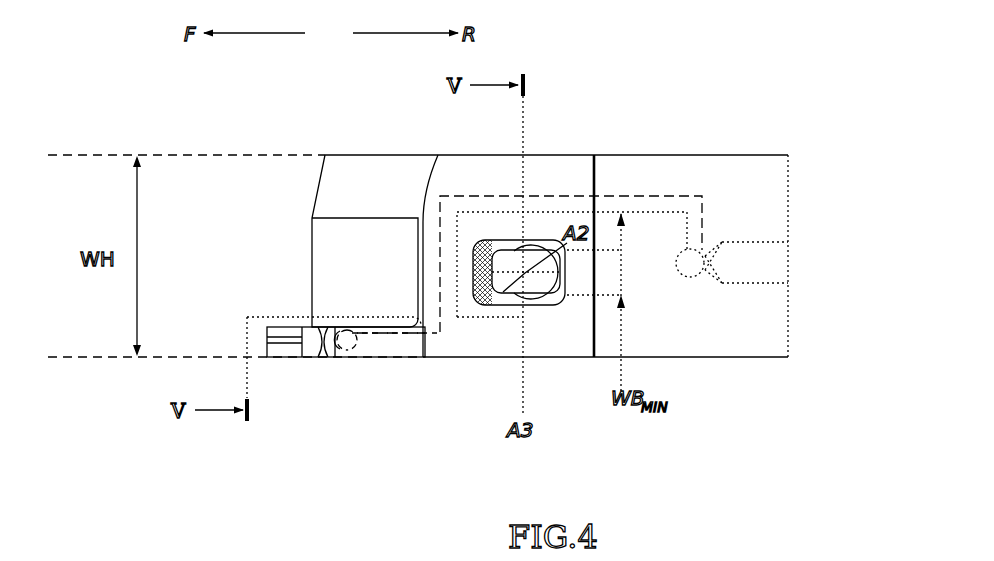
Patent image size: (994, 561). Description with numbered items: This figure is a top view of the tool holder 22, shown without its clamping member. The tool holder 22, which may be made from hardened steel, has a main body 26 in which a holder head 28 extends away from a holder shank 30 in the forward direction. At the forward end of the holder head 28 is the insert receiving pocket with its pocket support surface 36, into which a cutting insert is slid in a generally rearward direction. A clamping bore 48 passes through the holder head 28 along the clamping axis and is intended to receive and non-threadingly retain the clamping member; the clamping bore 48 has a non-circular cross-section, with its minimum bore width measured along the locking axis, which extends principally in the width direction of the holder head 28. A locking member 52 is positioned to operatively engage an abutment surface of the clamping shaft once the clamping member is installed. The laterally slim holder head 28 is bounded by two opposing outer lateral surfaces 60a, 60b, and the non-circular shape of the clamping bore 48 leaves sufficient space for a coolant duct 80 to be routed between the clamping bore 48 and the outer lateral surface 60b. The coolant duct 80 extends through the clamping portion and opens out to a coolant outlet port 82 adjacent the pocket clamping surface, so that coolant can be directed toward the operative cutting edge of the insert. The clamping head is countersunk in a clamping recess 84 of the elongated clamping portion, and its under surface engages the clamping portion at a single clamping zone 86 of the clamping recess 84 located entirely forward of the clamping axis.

The tool holder 22 is at (689, 113).
The main body 26 is at (608, 176).
The holder head 28 is at (362, 260).
The holder shank 30 is at (762, 211).
The pocket support surface 36 is at (293, 362).
The clamping bore 48 is at (505, 253).
The locking member 52 is at (530, 280).
The outer lateral surface 60a is at (490, 358).
The outer lateral surface 60b is at (541, 155).
The coolant duct 80 is at (664, 201).
The coolant outlet port 82 is at (346, 362).
The clamping recess 84 is at (554, 233).
The clamping zone 86 is at (477, 248).